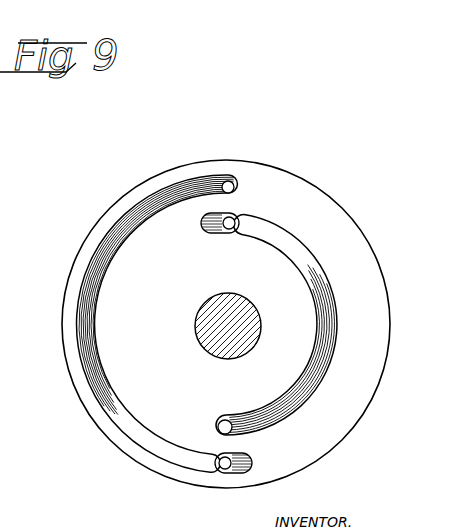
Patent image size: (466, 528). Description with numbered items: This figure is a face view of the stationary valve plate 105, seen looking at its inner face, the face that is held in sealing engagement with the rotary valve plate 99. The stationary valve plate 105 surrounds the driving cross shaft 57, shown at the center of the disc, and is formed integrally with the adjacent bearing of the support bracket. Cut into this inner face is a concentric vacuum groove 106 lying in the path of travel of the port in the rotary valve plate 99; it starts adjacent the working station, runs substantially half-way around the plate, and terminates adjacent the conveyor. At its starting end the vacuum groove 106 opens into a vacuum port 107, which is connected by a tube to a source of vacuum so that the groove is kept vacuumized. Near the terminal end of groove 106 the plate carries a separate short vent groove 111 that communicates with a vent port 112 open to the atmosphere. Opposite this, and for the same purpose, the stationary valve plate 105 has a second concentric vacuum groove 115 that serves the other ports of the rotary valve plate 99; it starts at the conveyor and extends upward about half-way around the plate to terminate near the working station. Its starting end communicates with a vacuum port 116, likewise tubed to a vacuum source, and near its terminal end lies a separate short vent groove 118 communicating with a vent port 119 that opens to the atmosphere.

The rotary valve plate 99 is at (9, 245).
The stationary valve plate 105 is at (329, 208).
The vacuum groove 106 is at (147, 186).
The vacuum port 107 is at (240, 188).
The vacuum groove 115 is at (344, 321).
The vacuum port 116 is at (235, 415).
The vent groove 118 is at (199, 234).
The vent port 119 is at (231, 237).
The driving cross shaft 57 is at (252, 313).
The vent groove 111 is at (258, 461).
The vent port 112 is at (218, 478).